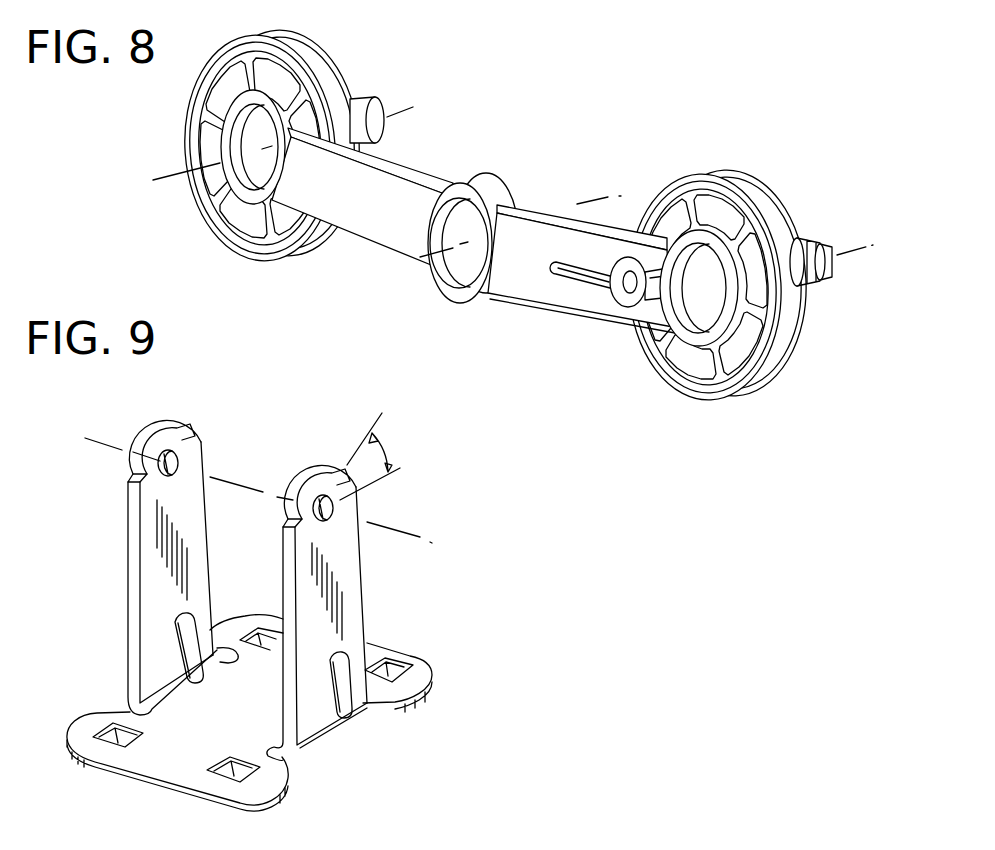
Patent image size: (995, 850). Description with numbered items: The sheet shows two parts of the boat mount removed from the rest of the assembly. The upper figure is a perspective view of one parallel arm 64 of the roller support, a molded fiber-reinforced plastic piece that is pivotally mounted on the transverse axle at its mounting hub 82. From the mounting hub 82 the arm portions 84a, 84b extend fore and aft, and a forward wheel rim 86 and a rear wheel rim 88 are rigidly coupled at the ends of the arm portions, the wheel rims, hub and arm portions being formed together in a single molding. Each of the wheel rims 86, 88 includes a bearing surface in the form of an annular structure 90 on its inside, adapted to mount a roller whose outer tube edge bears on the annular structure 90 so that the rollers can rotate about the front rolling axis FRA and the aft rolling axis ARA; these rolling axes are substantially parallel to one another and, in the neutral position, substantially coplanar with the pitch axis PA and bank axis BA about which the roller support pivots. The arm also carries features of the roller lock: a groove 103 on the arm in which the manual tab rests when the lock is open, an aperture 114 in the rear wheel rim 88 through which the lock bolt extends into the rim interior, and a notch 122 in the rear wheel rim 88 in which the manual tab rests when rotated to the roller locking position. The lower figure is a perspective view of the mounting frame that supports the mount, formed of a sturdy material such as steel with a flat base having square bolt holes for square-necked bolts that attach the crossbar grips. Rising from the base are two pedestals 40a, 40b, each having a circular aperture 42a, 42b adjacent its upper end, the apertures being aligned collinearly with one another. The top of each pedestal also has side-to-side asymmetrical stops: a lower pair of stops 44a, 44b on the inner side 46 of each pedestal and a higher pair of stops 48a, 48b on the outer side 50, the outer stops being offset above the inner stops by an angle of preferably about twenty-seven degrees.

In FIG. 8, the annular structure 90 is at (322, 57).
In FIG. 8, the forward wheel rim 86 is at (183, 130).
In FIG. 8, the rear wheel rim 88 is at (750, 387).
In FIG. 8, the mounting hub 82 is at (492, 173).
In FIG. 8, the parallel arm 64 is at (508, 197).
In FIG. 8, the arm portion 84a is at (370, 230).
In FIG. 8, the arm portion 84b is at (547, 297).
In FIG. 8, the groove 103 is at (563, 277).
In FIG. 8, the aperture 114 is at (630, 281).
In FIG. 8, the notch 122 is at (667, 330).
In FIG. 8, the front rolling axis FRA is at (170, 181).
In FIG. 8, the pitch axis PA is at (580, 196).
In FIG. 8, the aft rolling axis ARA is at (845, 245).
In FIG. 9, the pedestal 40a is at (327, 557).
In FIG. 9, the pedestal 40b is at (167, 509).
In FIG. 9, the circular aperture 42a is at (335, 507).
In FIG. 9, the circular aperture 42b is at (180, 462).
In FIG. 9, the lower stop 44a is at (290, 519).
In FIG. 9, the lower stop 44b is at (135, 474).
In FIG. 9, the inner side 46 is at (132, 607).
In FIG. 9, the higher stop 48a is at (333, 465).
In FIG. 9, the higher stop 48b is at (178, 420).
In FIG. 9, the outer side 50 is at (210, 585).
In FIG. 9, the bank axis BA is at (103, 430).